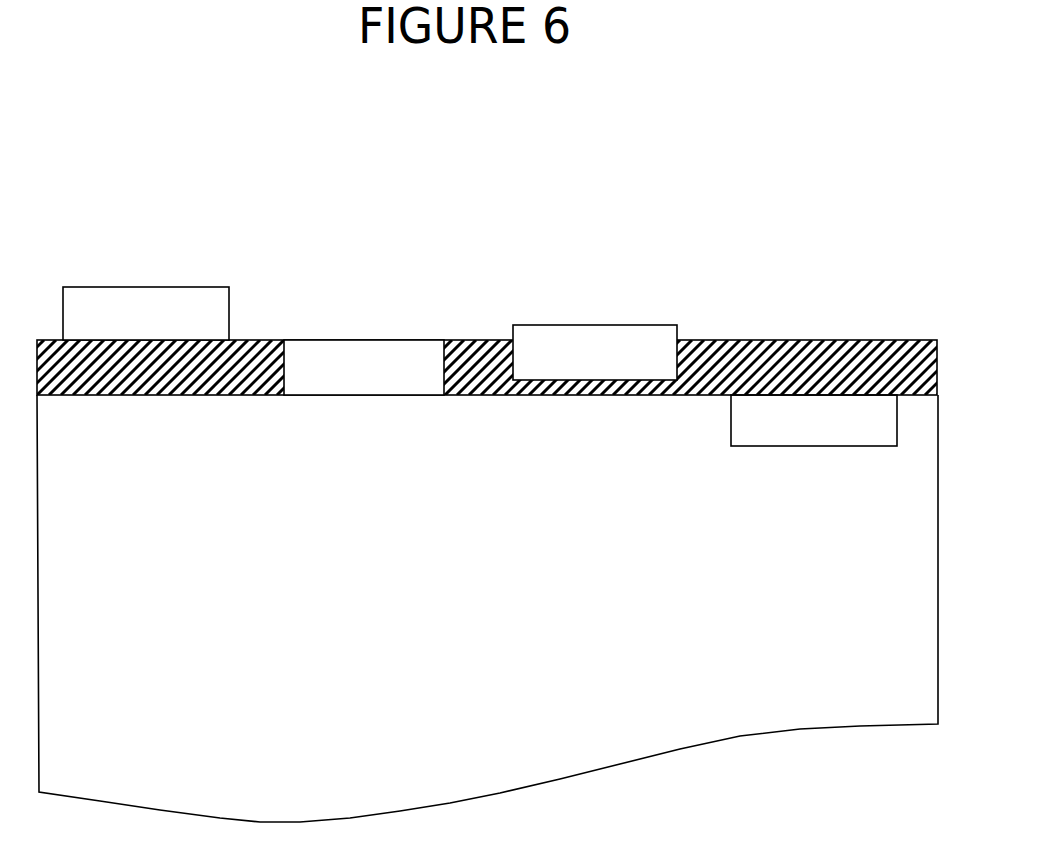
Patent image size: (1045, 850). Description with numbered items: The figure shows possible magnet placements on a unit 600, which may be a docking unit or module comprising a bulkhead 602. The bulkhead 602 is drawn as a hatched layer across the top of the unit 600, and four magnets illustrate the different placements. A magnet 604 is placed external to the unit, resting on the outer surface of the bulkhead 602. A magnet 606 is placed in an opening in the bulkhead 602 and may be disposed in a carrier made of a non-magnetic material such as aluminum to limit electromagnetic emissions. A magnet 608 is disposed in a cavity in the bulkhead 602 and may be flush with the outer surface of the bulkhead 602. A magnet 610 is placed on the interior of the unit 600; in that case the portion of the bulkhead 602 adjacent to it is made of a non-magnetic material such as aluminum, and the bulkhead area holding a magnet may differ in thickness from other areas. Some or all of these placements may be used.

The unit 600 is at (530, 790).
The bulkhead 602 is at (813, 330).
The magnet 604 is at (229, 276).
The magnet 606 is at (391, 408).
The magnet 608 is at (635, 316).
The magnet 610 is at (840, 458).